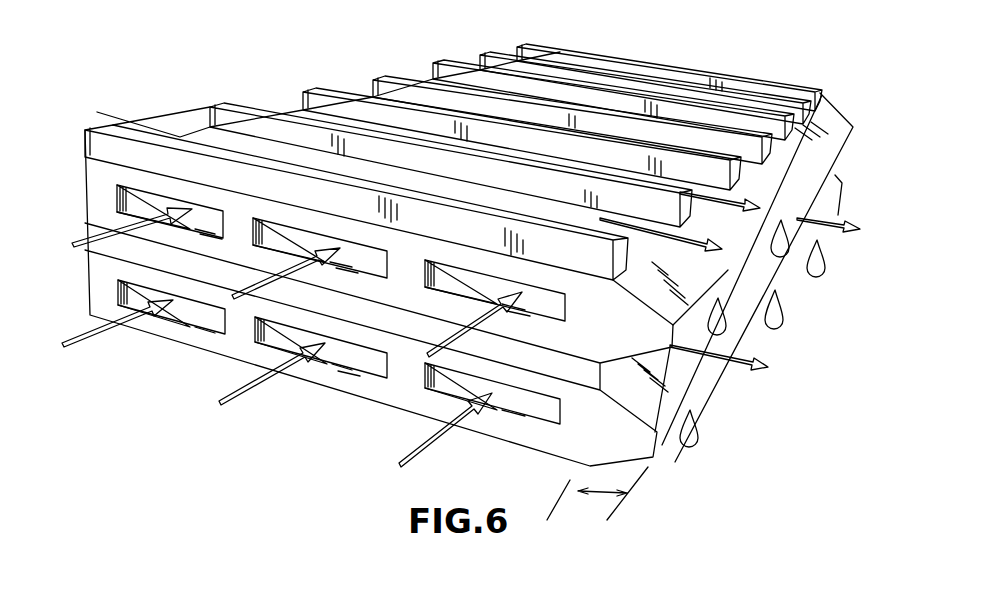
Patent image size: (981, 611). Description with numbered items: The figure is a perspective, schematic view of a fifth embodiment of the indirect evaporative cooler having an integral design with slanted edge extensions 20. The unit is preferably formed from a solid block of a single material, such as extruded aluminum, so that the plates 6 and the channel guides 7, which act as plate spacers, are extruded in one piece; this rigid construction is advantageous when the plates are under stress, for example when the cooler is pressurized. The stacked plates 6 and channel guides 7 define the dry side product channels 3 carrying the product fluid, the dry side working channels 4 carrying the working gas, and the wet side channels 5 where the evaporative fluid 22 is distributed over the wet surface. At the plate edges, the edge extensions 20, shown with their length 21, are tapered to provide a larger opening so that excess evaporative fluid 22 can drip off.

The dry side product channels 3 is at (747, 368).
The dry side working channels 4 is at (222, 400).
The wet side channels 5 is at (768, 145).
The plates 6 is at (336, 365).
The channel guides 7 is at (433, 63).
The edge extensions 20 is at (836, 185).
The length of edge extensions 21 is at (617, 502).
The evaporative fluid 22 is at (786, 322).